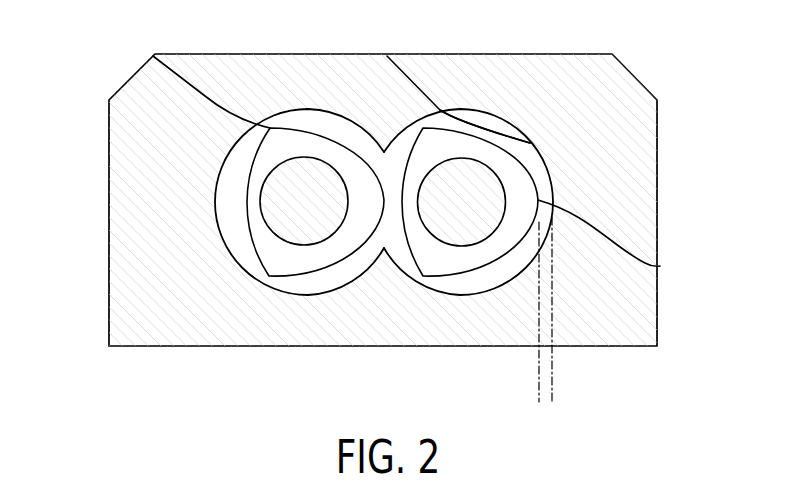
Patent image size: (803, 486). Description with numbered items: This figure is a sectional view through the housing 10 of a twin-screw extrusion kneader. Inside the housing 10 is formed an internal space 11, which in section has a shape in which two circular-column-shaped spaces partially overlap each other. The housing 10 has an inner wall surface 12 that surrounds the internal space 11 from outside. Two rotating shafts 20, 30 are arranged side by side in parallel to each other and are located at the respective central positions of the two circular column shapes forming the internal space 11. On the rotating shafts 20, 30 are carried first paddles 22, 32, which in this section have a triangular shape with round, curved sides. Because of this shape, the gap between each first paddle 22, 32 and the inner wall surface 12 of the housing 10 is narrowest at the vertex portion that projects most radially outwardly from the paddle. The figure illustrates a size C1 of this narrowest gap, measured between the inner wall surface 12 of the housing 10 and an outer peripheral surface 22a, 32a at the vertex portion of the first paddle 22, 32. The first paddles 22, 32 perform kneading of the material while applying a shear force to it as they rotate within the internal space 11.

The housing 10 is at (633, 88).
The internal space 11 is at (475, 121).
The inner wall surface 12 is at (387, 56).
The rotating shaft 20 is at (440, 225).
The first paddle 22 is at (432, 260).
The outer peripheral surface 22a is at (660, 266).
The rotating shaft 30 is at (282, 226).
The first paddle 32 is at (275, 260).
The outer peripheral surface 32a is at (153, 56).
The size of the narrowest gap C1 is at (498, 393).